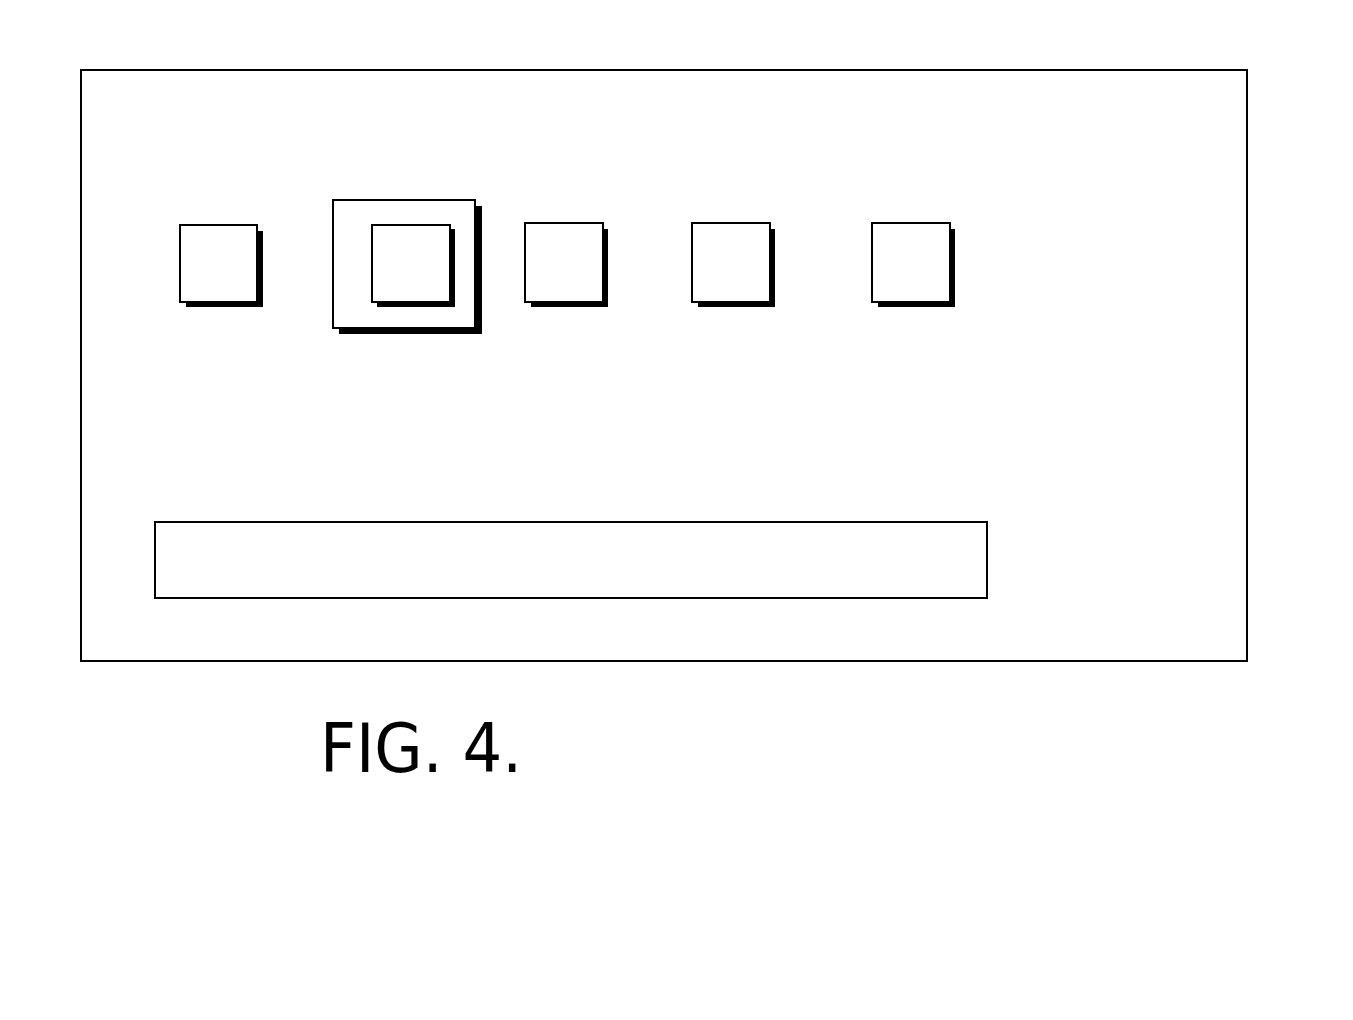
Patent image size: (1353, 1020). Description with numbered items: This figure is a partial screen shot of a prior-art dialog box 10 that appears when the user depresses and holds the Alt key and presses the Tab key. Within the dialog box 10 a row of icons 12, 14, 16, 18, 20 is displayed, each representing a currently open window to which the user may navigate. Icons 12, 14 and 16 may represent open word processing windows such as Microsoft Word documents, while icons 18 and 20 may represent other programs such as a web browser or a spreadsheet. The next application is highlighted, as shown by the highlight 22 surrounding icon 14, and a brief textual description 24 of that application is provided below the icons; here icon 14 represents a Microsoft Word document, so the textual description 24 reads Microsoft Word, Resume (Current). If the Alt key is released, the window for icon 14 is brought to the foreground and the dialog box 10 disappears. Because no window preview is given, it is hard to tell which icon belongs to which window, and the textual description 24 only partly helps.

The dialog box 10 is at (1246, 453).
The icon 12 is at (205, 307).
The icon 14 is at (412, 307).
The icon 16 is at (565, 307).
The icon 18 is at (730, 307).
The icon 20 is at (888, 307).
The highlight 22 is at (360, 334).
The textual description 24 is at (475, 520).